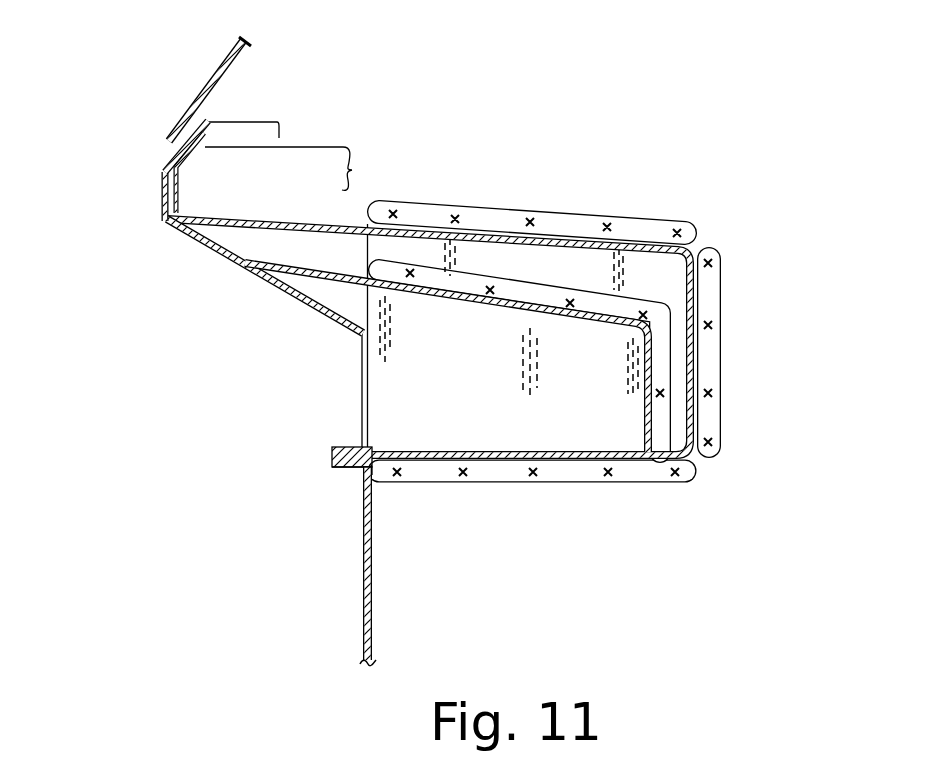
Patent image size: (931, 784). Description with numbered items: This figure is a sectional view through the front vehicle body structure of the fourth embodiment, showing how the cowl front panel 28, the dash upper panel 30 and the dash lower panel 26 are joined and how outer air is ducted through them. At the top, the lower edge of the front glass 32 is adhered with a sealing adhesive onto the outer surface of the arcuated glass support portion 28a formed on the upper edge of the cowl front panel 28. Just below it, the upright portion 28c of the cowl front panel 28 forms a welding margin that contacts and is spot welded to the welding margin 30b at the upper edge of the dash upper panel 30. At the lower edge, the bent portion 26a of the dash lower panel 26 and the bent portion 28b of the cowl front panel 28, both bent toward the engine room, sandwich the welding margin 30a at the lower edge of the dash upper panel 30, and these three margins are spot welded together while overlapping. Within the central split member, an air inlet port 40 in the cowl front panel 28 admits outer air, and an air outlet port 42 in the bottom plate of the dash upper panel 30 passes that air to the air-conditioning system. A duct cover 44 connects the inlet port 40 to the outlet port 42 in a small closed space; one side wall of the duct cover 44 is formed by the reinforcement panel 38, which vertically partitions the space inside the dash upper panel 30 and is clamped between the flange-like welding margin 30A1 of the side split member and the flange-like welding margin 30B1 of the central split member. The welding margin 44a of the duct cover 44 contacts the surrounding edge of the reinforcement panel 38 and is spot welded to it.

The dash lower panel 26 is at (385, 618).
The bent portion 26a is at (350, 468).
The cowl front panel 28 is at (375, 342).
The glass support portion 28a is at (170, 162).
The bent portion 28b is at (305, 475).
The upright portion 28c is at (163, 200).
The dash upper panel 30 is at (608, 344).
The welding margin 30a is at (333, 468).
The welding margin 30b is at (180, 188).
The flange-like welding margin 30A1 is at (663, 230).
The flange-like welding margin 30B1 is at (684, 218).
The front glass 32 is at (203, 98).
The reinforcement panel 38 is at (663, 282).
The air inlet port 40 is at (360, 402).
The air outlet port 42 is at (567, 458).
The duct cover 44 is at (440, 262).
The welding margin 44a is at (535, 293).